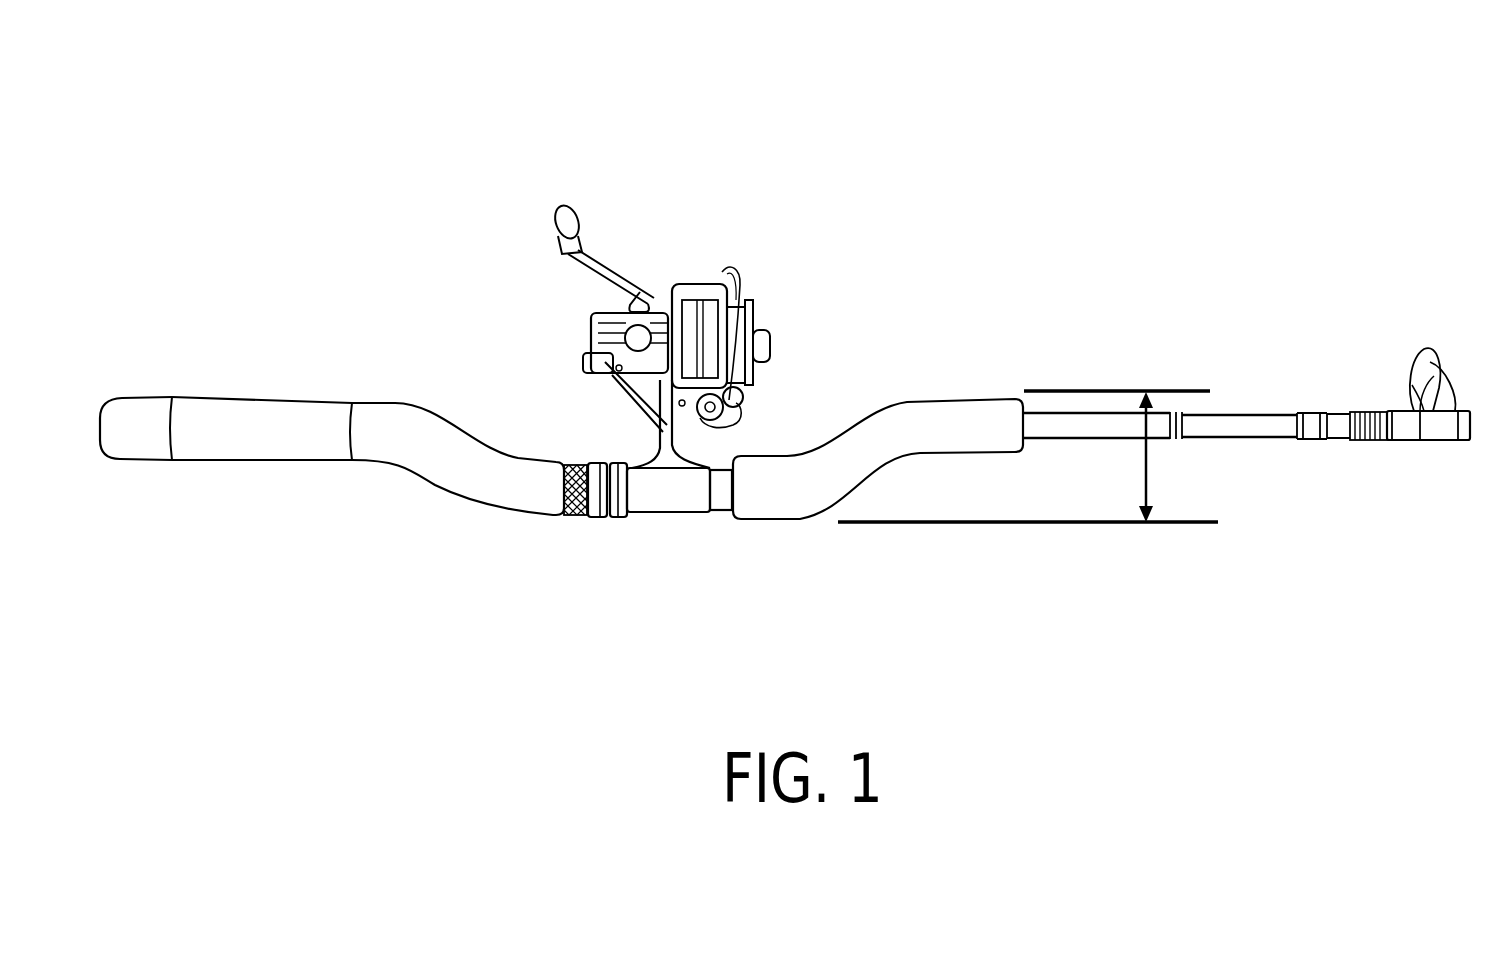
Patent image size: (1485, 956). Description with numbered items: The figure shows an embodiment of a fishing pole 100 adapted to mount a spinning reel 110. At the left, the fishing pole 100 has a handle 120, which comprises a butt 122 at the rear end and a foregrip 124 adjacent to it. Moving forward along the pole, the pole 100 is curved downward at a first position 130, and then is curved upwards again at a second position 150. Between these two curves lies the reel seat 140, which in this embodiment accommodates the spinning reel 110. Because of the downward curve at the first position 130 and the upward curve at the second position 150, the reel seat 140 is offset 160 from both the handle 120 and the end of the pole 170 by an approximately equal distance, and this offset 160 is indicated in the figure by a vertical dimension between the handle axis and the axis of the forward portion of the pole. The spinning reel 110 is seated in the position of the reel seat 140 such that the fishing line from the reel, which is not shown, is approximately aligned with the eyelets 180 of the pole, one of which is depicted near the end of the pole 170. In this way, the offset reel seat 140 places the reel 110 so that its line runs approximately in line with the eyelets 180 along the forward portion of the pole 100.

The fishing pole 100 is at (328, 134).
The spinning reel 110 is at (665, 264).
The handle 120 is at (294, 362).
The butt 122 is at (173, 478).
The foregrip 124 is at (356, 479).
The first position 130 is at (477, 549).
The reel seat 140 is at (652, 545).
The second position 150 is at (900, 383).
The offset 160 is at (1028, 456).
The end of the pole 170 is at (1283, 393).
The eyelets 180 is at (1412, 331).